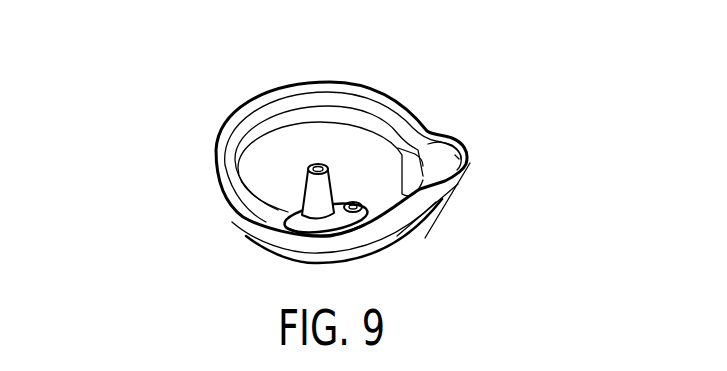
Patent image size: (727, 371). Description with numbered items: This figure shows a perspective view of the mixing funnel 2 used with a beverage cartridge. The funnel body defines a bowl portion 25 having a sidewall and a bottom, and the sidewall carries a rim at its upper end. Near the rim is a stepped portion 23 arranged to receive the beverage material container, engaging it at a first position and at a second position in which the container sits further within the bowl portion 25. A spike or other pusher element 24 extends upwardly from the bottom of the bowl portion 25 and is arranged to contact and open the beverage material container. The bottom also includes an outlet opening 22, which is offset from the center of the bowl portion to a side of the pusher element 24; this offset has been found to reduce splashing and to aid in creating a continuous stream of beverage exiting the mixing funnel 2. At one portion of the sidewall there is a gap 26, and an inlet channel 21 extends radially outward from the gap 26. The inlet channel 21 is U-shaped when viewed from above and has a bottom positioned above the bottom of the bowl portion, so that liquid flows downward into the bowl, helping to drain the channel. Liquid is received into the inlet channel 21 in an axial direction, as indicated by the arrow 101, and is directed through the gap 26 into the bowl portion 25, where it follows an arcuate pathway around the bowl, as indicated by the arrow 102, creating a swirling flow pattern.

The mixing funnel 2 is at (155, 78).
The inlet channel 21 is at (474, 157).
The outlet opening 22 is at (343, 203).
The stepped portion 23 is at (237, 110).
The pusher element 24 is at (318, 164).
The bowl portion 25 is at (250, 165).
The gap 26 is at (380, 205).
The arrow 101 is at (445, 138).
The arrow 102 is at (292, 196).